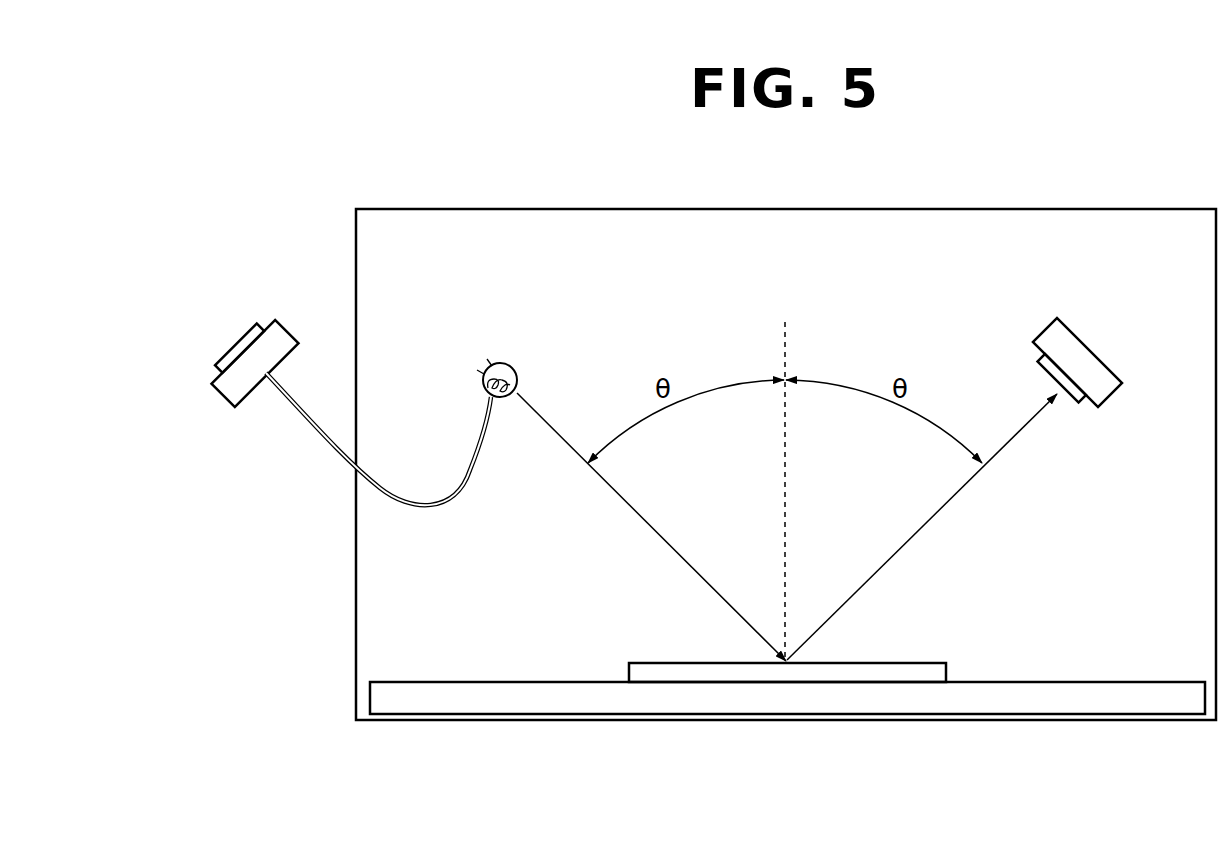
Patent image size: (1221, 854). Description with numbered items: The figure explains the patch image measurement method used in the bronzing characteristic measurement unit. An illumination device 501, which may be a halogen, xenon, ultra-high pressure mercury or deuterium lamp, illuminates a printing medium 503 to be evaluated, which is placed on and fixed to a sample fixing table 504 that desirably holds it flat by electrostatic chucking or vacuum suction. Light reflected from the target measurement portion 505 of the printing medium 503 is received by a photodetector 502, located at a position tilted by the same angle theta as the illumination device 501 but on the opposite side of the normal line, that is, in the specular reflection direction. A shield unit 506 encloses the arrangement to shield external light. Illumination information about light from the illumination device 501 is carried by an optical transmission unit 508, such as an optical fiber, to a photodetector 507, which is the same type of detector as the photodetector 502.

The illumination device 501 is at (502, 362).
The photodetector 502 is at (1088, 350).
The printing medium 503 is at (922, 662).
The sample fixing table 504 is at (1086, 681).
The target measurement portion 505 is at (788, 660).
The shield unit 506 is at (1135, 208).
The photodetector 507 is at (233, 342).
The optical transmission unit 508 is at (313, 437).